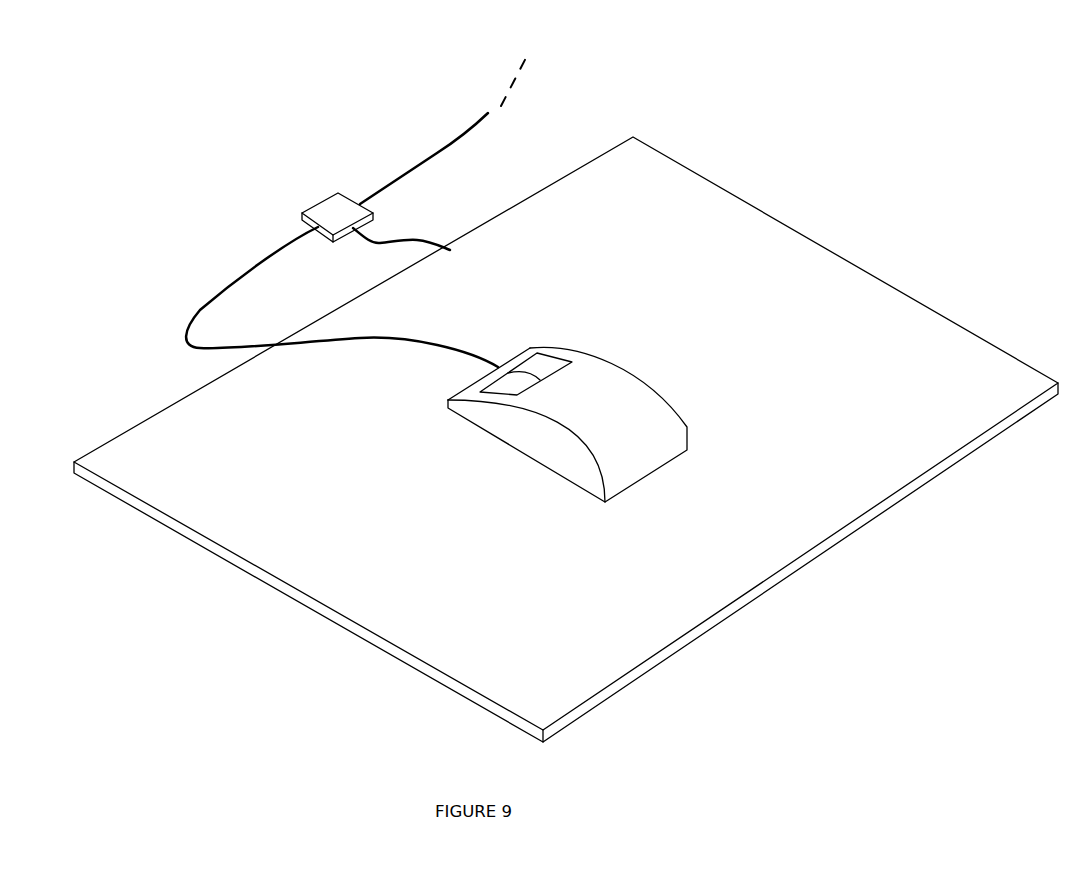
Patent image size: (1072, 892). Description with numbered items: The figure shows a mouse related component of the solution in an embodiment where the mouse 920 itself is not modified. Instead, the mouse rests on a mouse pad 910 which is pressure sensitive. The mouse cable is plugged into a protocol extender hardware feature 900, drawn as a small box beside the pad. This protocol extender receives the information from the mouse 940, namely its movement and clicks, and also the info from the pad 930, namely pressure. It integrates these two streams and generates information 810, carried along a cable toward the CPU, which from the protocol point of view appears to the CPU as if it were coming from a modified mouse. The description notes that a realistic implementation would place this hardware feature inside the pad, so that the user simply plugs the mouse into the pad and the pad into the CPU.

The information 810 is at (437, 153).
The protocol extender hardware feature 900 is at (333, 193).
The mouse pad 910 is at (650, 148).
The mouse 920 is at (595, 353).
The info from the pad 930 is at (398, 242).
The information from the mouse 940 is at (202, 343).